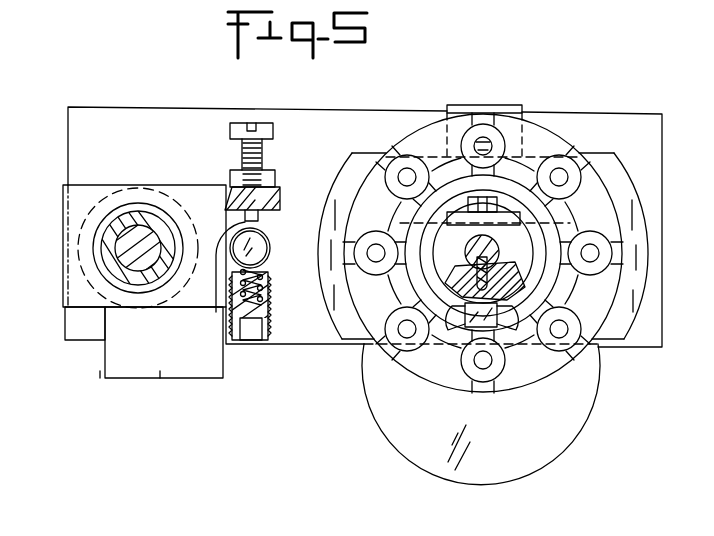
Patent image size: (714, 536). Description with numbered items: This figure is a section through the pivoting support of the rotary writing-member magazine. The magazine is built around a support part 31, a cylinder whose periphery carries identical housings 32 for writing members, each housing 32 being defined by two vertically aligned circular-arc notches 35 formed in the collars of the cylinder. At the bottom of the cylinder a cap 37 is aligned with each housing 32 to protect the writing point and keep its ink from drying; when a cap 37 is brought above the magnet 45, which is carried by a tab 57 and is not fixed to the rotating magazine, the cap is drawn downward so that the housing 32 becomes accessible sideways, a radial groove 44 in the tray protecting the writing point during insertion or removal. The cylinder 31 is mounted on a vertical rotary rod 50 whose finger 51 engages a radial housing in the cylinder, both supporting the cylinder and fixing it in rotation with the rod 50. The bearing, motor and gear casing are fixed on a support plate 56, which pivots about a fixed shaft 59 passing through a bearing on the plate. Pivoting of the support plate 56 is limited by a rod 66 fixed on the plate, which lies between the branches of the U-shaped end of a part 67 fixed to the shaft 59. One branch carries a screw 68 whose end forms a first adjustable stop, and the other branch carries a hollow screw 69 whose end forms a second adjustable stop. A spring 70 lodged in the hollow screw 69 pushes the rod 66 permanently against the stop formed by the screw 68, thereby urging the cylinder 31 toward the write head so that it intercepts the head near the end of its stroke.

The support part 31 is at (420, 275).
The housing 32 is at (438, 160).
The notch 35 is at (579, 314).
The cap 37 is at (582, 238).
The radial groove 44 is at (575, 162).
The magnet 45 is at (508, 132).
The rotary rod 50 is at (473, 258).
The finger 51 is at (500, 264).
The support plate 56 is at (158, 107).
The tab 57 is at (486, 105).
The fixed shaft 59 is at (140, 215).
The rod 66 is at (262, 244).
The part 67 is at (63, 197).
The screw 68 is at (242, 148).
The hollow screw 69 is at (255, 336).
The spring 70 is at (262, 273).